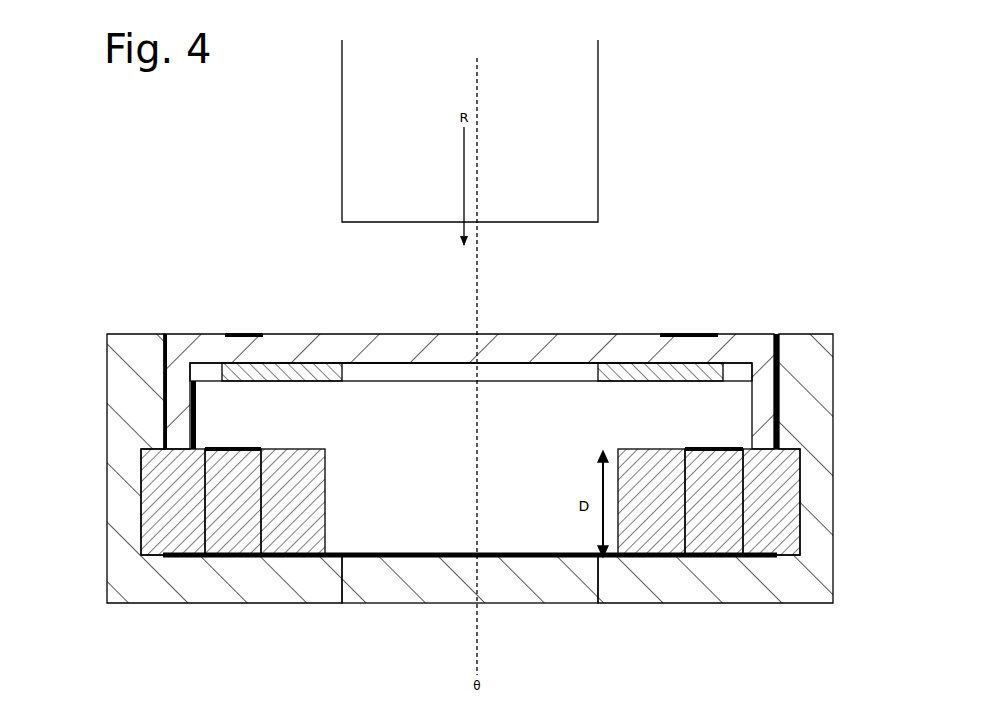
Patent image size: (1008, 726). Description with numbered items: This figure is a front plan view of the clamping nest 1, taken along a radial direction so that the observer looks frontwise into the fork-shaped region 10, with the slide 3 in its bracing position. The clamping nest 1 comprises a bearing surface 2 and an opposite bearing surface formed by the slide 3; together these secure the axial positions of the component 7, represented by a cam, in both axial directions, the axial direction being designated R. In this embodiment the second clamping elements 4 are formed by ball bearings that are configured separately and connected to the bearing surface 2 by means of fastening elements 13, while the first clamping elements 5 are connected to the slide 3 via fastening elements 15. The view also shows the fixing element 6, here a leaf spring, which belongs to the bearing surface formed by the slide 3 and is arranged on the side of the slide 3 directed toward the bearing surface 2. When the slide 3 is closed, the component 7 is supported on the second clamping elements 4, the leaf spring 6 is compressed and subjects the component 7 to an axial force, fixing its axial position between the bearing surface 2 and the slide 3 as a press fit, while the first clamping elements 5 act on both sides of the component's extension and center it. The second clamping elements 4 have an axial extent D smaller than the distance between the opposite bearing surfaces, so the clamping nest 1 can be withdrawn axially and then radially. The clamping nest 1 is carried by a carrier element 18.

The clamping nest 1 is at (127, 197).
The bearing surface 2 is at (340, 552).
The slide 3 is at (180, 398).
The second clamping elements 4 is at (768, 490).
The first clamping elements 5 is at (318, 374).
The fixing element 6 is at (583, 373).
The component 7 is at (526, 445).
The fork-shaped region 10 is at (302, 345).
The fastening elements 13 is at (233, 448).
The fastening elements 15 is at (262, 333).
The carrier element 18 is at (598, 103).